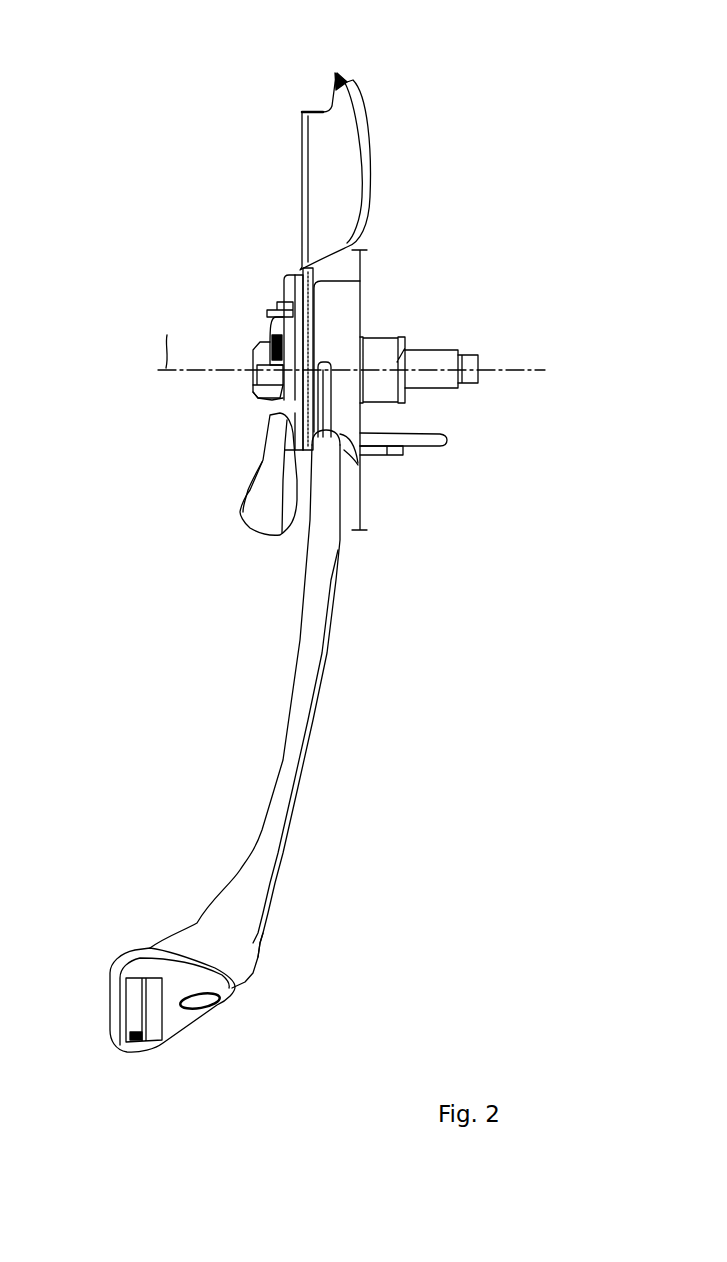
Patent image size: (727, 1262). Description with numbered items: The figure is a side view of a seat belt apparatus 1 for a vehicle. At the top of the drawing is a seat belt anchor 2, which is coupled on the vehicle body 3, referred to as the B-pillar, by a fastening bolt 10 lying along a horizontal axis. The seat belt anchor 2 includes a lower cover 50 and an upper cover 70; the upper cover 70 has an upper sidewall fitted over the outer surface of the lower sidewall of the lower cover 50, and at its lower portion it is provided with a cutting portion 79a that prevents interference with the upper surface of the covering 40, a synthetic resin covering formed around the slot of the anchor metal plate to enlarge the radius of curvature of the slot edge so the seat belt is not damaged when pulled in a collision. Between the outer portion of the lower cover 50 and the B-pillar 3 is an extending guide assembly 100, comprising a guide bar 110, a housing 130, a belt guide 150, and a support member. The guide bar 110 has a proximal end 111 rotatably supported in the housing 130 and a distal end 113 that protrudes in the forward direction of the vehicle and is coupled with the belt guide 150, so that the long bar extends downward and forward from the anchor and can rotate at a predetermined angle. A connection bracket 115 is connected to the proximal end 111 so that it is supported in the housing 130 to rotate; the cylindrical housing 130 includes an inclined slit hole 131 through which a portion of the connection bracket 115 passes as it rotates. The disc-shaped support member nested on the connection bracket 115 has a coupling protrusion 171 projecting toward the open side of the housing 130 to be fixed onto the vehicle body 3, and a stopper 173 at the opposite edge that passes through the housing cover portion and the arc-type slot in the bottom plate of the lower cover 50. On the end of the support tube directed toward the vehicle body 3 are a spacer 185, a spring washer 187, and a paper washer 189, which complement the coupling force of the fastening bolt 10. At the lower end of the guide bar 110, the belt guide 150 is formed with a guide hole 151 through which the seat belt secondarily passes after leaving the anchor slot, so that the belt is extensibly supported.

The seat belt apparatus 1 is at (520, 43).
The seat belt anchor 2 is at (258, 410).
The vehicle body 3 is at (362, 512).
The fastening bolt 10 is at (250, 360).
The covering 40 is at (267, 527).
The lower cover 50 is at (279, 278).
The upper cover 70 is at (354, 161).
The cutting portion 79a is at (335, 83).
The extending guide assembly 100 is at (400, 460).
The guide bar 110 is at (273, 788).
The proximal end 111 is at (260, 942).
The distal end 113 is at (323, 455).
The connection bracket 115 is at (345, 462).
The housing 130 is at (345, 302).
The slit hole 131 is at (331, 415).
The belt guide 150 is at (173, 1020).
The guide hole 151 is at (137, 1008).
The coupling protrusion 171 is at (447, 444).
The stopper 173 is at (268, 318).
The spacer 185 is at (385, 347).
The spring washer 187 is at (407, 342).
The paper washer 189 is at (413, 390).